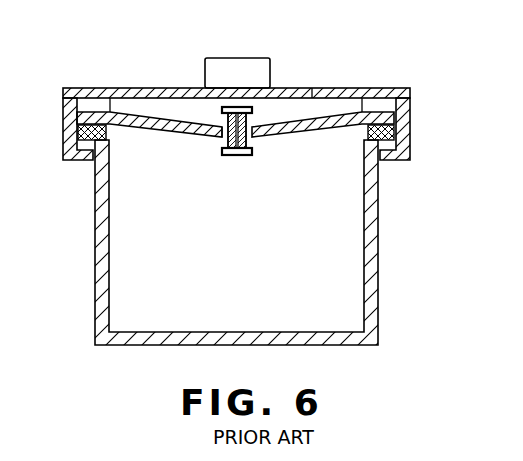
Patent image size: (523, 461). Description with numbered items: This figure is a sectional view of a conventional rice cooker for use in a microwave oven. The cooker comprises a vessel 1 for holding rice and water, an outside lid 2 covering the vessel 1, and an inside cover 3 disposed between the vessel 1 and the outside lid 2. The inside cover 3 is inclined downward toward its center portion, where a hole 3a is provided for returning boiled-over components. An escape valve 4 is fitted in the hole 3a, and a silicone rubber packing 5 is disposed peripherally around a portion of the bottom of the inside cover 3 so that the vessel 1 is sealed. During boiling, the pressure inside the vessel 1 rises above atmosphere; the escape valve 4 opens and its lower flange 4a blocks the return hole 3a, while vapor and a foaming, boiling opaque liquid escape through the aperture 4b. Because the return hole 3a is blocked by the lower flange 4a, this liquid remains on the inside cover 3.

The vessel 1 is at (373, 235).
The outside lid 2 is at (410, 88).
The inside cover 3 is at (326, 133).
The hole 3a is at (223, 141).
The escape valve 4 is at (195, 230).
The lower flange 4a is at (232, 153).
The aperture 4b is at (242, 155).
The silicone rubber packing 5 is at (105, 130).